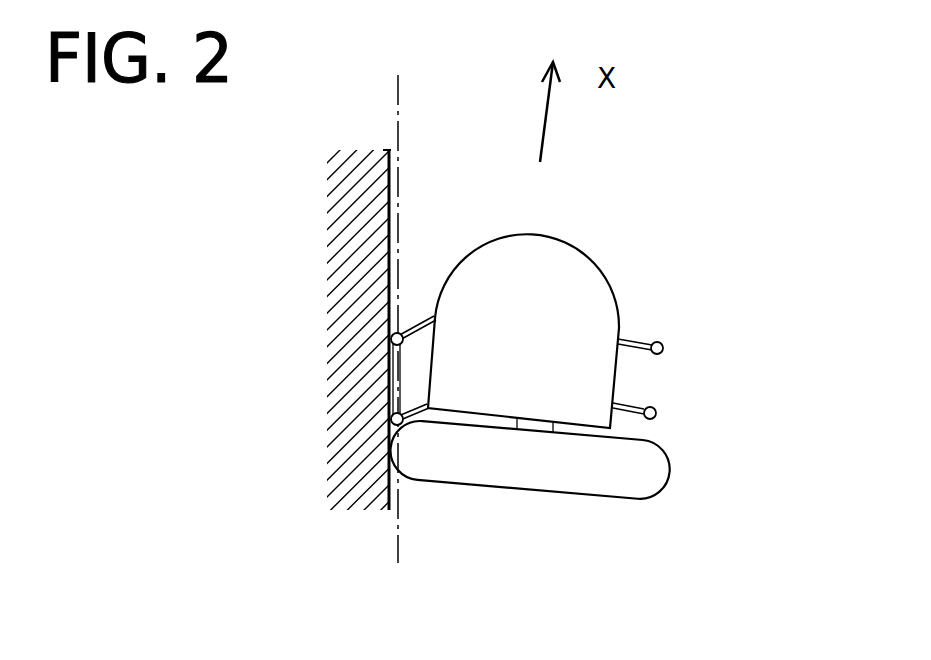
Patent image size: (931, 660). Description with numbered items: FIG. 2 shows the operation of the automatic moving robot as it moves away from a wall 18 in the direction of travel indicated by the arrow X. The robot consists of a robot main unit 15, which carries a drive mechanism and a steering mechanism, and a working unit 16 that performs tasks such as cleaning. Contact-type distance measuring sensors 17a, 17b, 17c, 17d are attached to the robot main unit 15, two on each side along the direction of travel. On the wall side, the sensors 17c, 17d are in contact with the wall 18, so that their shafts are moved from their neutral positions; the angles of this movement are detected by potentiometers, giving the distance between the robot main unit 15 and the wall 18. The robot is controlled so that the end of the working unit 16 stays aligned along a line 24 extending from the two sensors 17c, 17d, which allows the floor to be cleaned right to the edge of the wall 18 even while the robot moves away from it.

The robot main unit 15 is at (582, 270).
The working unit 16 is at (652, 482).
The contact-type distance measuring sensor 17a is at (662, 343).
The contact-type distance measuring sensor 17b is at (656, 410).
The contact-type distance measuring sensor 17c is at (391, 338).
The contact-type distance measuring sensor 17d is at (391, 420).
The wall 18 is at (390, 178).
The line 24 is at (398, 535).